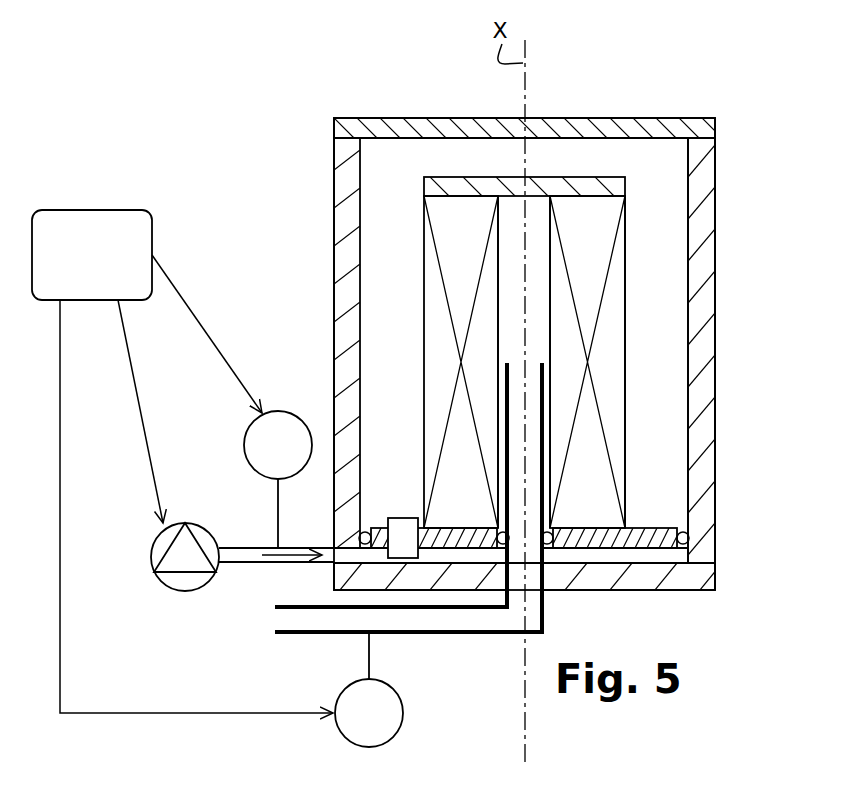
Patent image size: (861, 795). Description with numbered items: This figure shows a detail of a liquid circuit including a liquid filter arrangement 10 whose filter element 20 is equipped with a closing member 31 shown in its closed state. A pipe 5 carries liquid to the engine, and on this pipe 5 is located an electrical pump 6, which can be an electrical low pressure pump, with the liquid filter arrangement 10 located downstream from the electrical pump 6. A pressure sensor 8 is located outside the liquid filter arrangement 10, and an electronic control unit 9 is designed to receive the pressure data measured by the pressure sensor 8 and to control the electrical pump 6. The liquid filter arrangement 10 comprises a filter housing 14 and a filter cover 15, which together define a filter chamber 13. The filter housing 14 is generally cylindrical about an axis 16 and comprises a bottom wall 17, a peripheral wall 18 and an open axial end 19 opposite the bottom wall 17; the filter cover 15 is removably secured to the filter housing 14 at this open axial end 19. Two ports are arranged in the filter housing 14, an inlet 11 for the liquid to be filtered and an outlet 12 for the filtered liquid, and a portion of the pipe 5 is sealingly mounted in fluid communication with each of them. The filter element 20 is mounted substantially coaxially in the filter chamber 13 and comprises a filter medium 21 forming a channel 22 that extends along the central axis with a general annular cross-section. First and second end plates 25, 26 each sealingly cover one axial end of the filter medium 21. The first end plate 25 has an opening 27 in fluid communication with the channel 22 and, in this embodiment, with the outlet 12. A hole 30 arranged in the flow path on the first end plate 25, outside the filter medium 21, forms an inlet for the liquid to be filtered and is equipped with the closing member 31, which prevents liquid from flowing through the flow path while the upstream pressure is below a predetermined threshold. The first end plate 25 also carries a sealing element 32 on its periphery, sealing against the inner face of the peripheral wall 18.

The pipe 5 is at (247, 547).
The electrical pump 6 is at (200, 588).
The pressure sensor 8 is at (298, 417).
The electronic control unit 9 is at (182, 461).
The liquid filter arrangement 10 is at (745, 170).
The inlet port 11 is at (344, 590).
The outlet port 12 is at (550, 587).
The filter chamber 13 is at (658, 245).
The filter housing 14 is at (698, 210).
The filter cover 15 is at (686, 125).
The axis 16 is at (525, 78).
The bottom wall 17 is at (643, 580).
The peripheral wall 18 is at (702, 388).
The open axial end 19 is at (649, 140).
The filter element 20 is at (640, 328).
The filter medium 21 is at (452, 240).
The channel 22 is at (516, 227).
The first end plate 25 is at (660, 528).
The second end plate 26 is at (458, 187).
The opening 27 is at (547, 522).
The hole 30 is at (420, 540).
The closing member 31 is at (402, 535).
The sealing element 32 is at (683, 536).